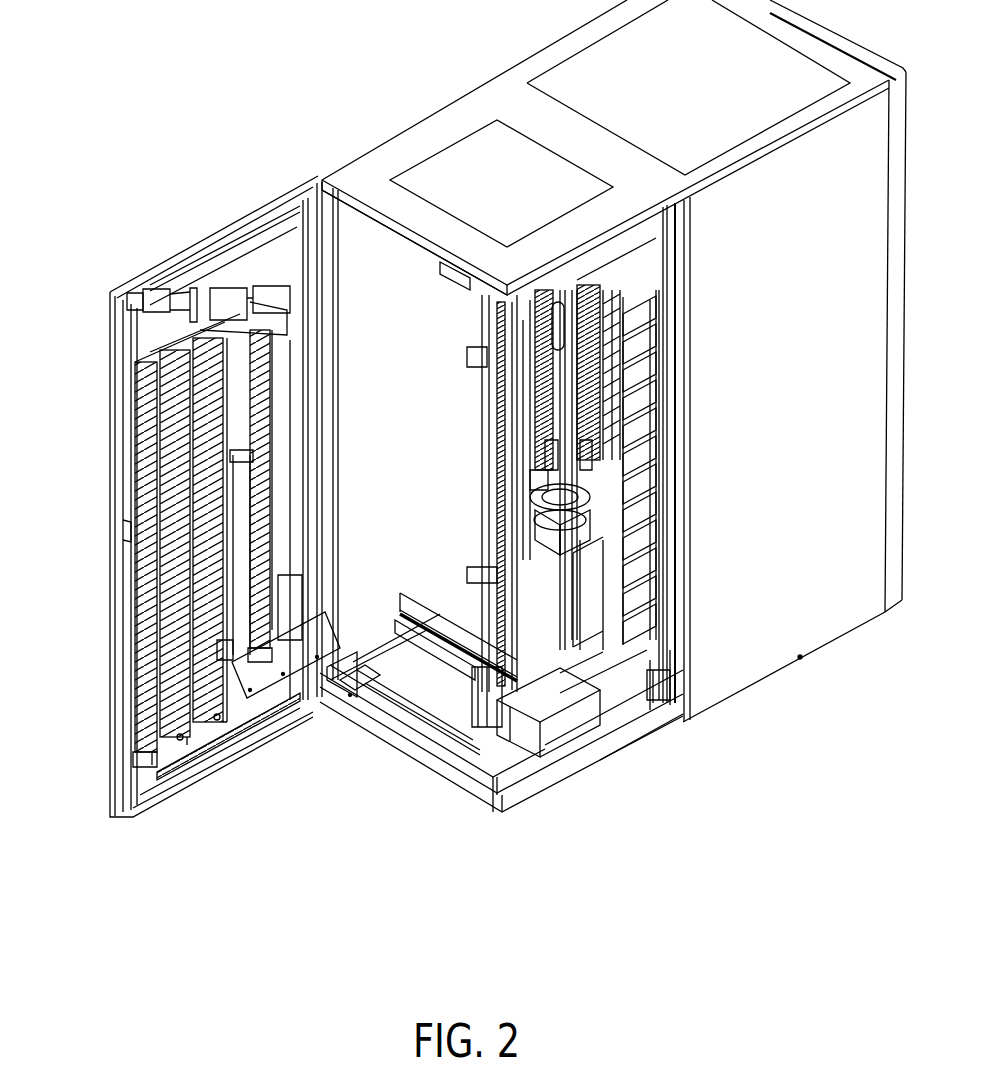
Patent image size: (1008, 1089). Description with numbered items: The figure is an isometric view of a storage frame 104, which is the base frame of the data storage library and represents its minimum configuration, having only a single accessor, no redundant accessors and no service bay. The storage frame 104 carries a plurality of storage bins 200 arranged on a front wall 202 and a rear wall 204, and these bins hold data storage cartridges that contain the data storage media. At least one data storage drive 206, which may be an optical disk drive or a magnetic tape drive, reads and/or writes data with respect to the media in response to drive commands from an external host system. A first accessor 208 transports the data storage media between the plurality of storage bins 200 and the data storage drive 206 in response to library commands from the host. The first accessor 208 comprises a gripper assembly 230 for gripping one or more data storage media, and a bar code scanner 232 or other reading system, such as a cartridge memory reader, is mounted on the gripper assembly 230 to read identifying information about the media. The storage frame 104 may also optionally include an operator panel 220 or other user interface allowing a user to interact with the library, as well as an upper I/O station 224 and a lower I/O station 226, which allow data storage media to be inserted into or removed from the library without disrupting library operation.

The storage frame 104 is at (381, 821).
The storage bins 200 is at (493, 417).
The front wall 202 is at (118, 473).
The rear wall 204 is at (503, 330).
The data storage drive 206 is at (647, 285).
The first accessor 208 is at (550, 727).
The operator panel 220 is at (290, 299).
The upper I/O station 224 is at (280, 332).
The lower I/O station 226 is at (278, 532).
The gripper assembly 230 is at (630, 507).
The bar code scanner 232 is at (490, 541).